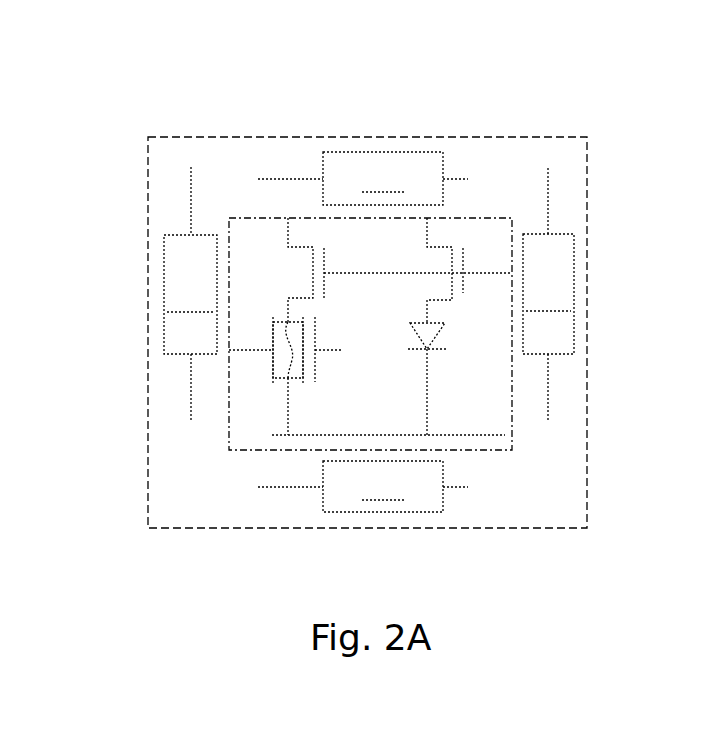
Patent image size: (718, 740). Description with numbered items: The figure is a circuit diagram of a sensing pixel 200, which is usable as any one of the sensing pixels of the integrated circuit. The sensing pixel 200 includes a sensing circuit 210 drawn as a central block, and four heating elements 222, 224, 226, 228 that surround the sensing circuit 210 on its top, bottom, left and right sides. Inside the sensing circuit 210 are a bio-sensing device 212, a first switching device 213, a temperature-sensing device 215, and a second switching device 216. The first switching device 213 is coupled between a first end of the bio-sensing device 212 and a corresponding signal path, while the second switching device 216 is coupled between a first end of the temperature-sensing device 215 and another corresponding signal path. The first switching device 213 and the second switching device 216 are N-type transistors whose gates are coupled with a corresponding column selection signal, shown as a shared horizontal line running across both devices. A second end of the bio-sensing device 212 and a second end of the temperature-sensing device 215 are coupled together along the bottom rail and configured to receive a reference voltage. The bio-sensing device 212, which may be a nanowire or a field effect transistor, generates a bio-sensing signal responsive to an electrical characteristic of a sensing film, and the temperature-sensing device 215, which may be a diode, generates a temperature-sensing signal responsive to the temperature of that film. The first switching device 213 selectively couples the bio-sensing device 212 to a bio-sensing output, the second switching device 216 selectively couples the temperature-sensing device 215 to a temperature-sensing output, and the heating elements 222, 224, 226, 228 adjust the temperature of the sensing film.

The sensing pixel 200 is at (578, 80).
The sensing circuit 210 is at (229, 430).
The bio-sensing device 212 is at (315, 380).
The first switching device 213 is at (325, 258).
The temperature-sensing device 215 is at (410, 325).
The second switching device 216 is at (463, 293).
The heating element 222 is at (363, 178).
The heating element 224 is at (363, 486).
The heating element 226 is at (190, 293).
The heating element 228 is at (548, 295).